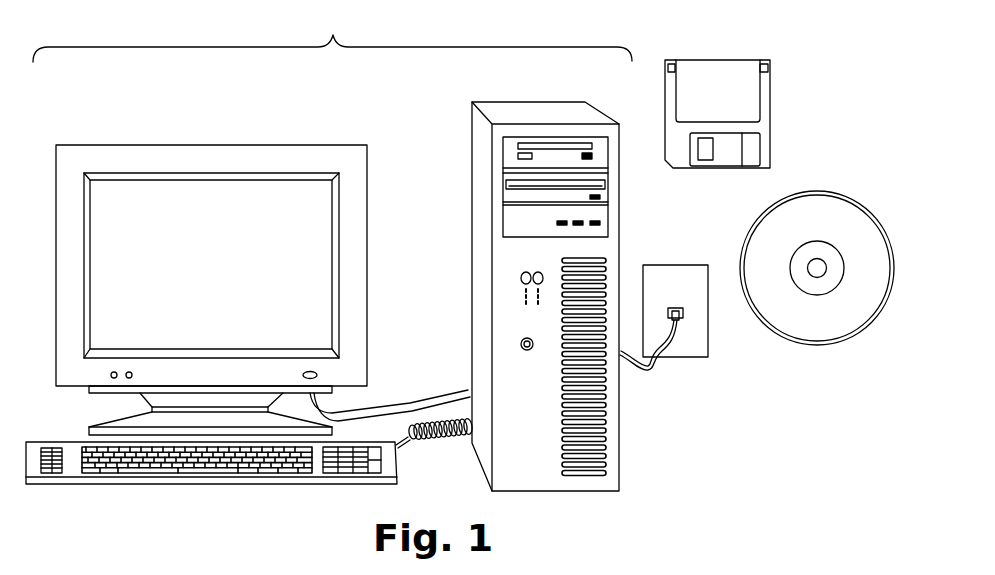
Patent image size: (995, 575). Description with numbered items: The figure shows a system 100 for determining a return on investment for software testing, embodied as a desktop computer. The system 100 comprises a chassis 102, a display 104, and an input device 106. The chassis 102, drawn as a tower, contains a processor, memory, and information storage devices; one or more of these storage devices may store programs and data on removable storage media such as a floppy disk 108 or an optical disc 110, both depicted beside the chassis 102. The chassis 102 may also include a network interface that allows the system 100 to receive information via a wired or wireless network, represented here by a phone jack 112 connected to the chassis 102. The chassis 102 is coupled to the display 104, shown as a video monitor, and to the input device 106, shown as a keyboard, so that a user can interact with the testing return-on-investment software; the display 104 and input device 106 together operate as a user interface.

The system 100 is at (332, 35).
The chassis 102 is at (472, 337).
The display 104 is at (77, 386).
The input device 106 is at (72, 484).
The floppy disk 108 is at (770, 146).
The optical disc 110 is at (832, 193).
The phone jack 112 is at (667, 266).